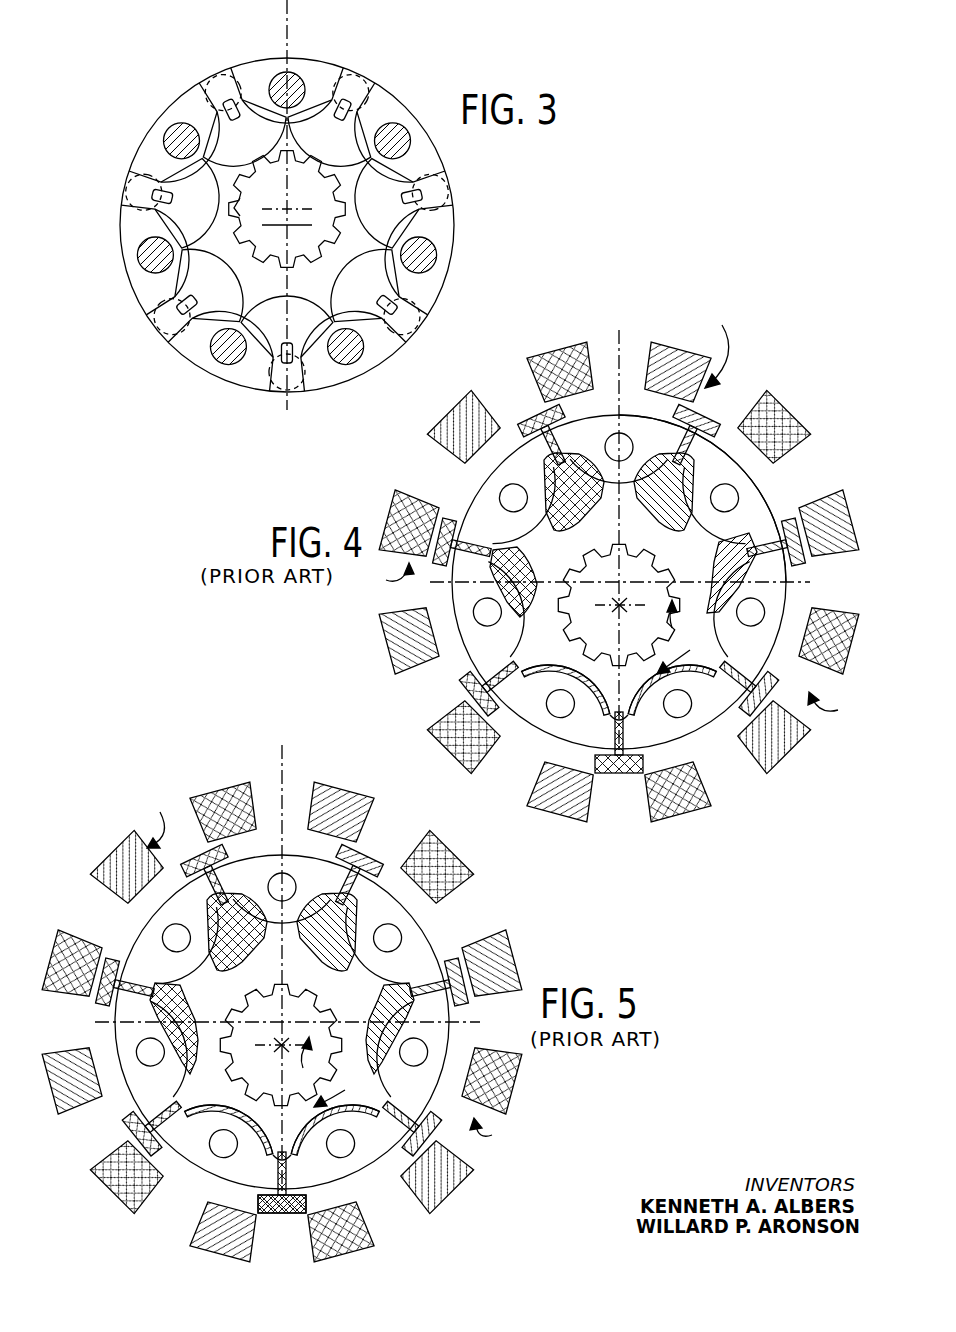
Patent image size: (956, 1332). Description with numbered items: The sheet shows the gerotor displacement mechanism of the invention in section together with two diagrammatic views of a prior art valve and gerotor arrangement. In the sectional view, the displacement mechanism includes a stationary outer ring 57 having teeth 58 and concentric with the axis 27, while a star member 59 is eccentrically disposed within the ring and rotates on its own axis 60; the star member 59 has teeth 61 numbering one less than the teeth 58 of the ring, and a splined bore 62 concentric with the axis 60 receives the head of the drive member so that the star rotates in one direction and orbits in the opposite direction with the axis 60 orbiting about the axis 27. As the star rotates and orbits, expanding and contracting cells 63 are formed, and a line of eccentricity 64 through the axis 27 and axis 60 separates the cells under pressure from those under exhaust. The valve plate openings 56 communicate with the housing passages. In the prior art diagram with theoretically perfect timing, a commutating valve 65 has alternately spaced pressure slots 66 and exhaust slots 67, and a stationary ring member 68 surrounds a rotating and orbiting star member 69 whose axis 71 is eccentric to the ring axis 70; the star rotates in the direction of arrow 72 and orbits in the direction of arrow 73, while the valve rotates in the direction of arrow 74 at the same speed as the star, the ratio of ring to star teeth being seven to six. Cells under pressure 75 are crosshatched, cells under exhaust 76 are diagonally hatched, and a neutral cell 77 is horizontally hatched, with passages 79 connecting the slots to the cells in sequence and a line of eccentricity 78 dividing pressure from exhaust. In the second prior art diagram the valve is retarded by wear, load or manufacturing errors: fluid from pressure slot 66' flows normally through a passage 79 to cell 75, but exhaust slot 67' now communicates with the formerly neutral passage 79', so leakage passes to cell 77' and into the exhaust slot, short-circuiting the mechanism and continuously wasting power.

In FIG. 3, the axis 27 is at (286, 226).
In FIG. 3, the openings 56 is at (287, 229).
In FIG. 3, the stationary outer ring 57 is at (330, 76).
In FIG. 3, the teeth 58 is at (282, 215).
In FIG. 3, the star member 59 is at (398, 216).
In FIG. 3, the axis 60 is at (289, 209).
In FIG. 3, the teeth 61 is at (283, 240).
In FIG. 3, the bore 62 is at (234, 208).
In FIG. 3, the cells 63 is at (276, 218).
In FIG. 3, the line of eccentricity 64 is at (291, 49).
In FIG. 4, the valve 65 is at (718, 344).
In FIG. 5, the valve 65 is at (155, 818).
In FIG. 4, the pressure slots 66 is at (623, 580).
In FIG. 5, the valve pressure slot 66' is at (282, 1022).
In FIG. 4, the exhaust slots 67 is at (608, 592).
In FIG. 5, the exhaust slot 67' is at (282, 1039).
In FIG. 4, the stationary ring member 68 is at (760, 480).
In FIG. 4, the star member 69 is at (662, 500).
In FIG. 5, the star member 69 is at (287, 1022).
In FIG. 4, the axis of the ring member 70 is at (623, 584).
In FIG. 5, the axis of the ring member 70 is at (284, 1022).
In FIG. 4, the axis of the star member 71 is at (621, 607).
In FIG. 5, the axis of the star member 71 is at (279, 1049).
In FIG. 4, the arrow 72 is at (685, 658).
In FIG. 5, the arrow 72 is at (343, 1092).
In FIG. 4, the arrow 73 is at (685, 619).
In FIG. 5, the arrow 73 is at (300, 1066).
In FIG. 4, the arrow 74 is at (609, 643).
In FIG. 5, the arrow 74 is at (493, 1135).
In FIG. 4, the cells under pressure 75 is at (545, 547).
In FIG. 5, the cells under pressure 75 is at (190, 1108).
In FIG. 4, the cells under exhaust 76 is at (700, 585).
In FIG. 5, the cells under exhaust 76 is at (347, 1025).
In FIG. 4, the neutral cell 77 is at (602, 730).
In FIG. 5, the cell 77' is at (262, 1169).
In FIG. 4, the line of eccentricity 78 is at (624, 400).
In FIG. 5, the line of eccentricity 78 is at (287, 771).
In FIG. 4, the passages 79 is at (622, 625).
In FIG. 5, the passages 79 is at (282, 1028).
In FIG. 5, the passage 79' is at (321, 1195).